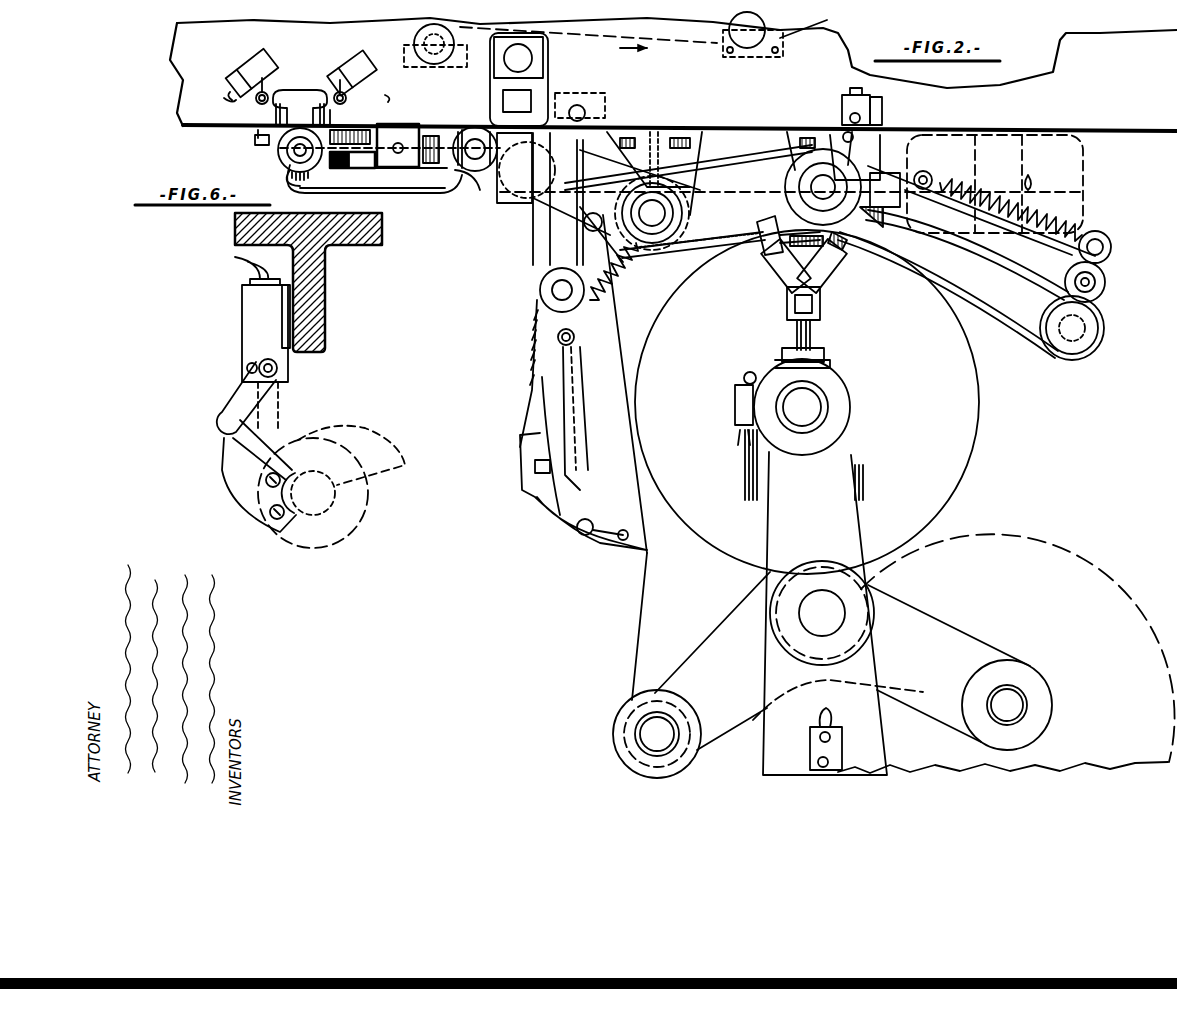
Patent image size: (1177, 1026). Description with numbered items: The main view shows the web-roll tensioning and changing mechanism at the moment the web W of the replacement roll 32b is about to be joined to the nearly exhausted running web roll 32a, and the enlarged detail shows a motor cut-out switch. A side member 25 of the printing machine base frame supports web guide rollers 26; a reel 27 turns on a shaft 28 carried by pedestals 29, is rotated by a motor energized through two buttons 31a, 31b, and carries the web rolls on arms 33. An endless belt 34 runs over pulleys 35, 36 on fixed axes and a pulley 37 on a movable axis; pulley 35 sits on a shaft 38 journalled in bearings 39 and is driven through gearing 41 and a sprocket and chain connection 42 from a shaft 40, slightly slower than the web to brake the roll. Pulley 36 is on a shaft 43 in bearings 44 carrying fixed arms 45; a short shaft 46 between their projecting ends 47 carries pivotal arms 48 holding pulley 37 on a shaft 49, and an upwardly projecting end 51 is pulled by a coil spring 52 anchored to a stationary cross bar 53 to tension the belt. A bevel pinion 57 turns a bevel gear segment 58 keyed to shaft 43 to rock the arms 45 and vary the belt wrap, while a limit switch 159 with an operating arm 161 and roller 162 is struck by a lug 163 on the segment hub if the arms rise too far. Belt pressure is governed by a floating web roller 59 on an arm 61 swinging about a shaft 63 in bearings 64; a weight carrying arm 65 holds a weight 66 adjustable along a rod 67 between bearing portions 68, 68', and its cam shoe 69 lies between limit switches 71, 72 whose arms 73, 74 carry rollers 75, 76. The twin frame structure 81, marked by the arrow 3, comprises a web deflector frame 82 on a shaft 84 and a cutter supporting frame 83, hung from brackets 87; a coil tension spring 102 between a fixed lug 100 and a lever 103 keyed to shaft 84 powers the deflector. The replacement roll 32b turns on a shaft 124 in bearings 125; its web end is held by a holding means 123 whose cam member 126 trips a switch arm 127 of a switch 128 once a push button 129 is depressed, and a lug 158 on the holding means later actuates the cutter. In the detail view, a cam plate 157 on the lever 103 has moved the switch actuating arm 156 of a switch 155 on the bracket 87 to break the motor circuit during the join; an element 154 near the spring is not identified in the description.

In FIG. 2, the lever 3 is at (520, 335).
In FIG. 2, the side member of printing machine base frame 25 is at (750, 126).
In FIG. 2, the web guide rollers 26 is at (520, 85).
In FIG. 2, the reel 27 is at (822, 602).
In FIG. 2, the shaft 28 is at (797, 600).
In FIG. 2, the pedestals 29 is at (887, 743).
In FIG. 2, the button 31a is at (830, 735).
In FIG. 2, the button 31b is at (818, 760).
In FIG. 2, the running web roll 32a is at (620, 743).
In FIG. 2, the replacement roll 32b is at (978, 445).
In FIG. 2, the arms 33 is at (705, 643).
In FIG. 2, the endless belt 34 is at (1000, 338).
In FIG. 2, the pulley 35 is at (693, 228).
In FIG. 2, the pulley 36 is at (783, 205).
In FIG. 2, the pulley 37 is at (1047, 320).
In FIG. 2, the shaft 38 is at (652, 217).
In FIG. 2, the bearings 39 is at (697, 181).
In FIG. 2, the shaft 40 is at (716, 193).
In FIG. 2, the gearing 41 is at (573, 237).
In FIG. 2, the sprocket and chain connection 42 is at (630, 160).
In FIG. 2, the shaft 43 is at (845, 262).
In FIG. 2, the bearings 44 is at (782, 145).
In FIG. 2, the arms 45 is at (960, 240).
In FIG. 2, the short shaft 46 is at (1062, 288).
In FIG. 2, the projecting ends 47 is at (1108, 285).
In FIG. 2, the pivotal arms 48 is at (1103, 307).
In FIG. 2, the shaft 49 is at (1070, 345).
In FIG. 2, the upwardly projecting end 51 is at (1078, 258).
In FIG. 2, the spring 52 is at (1035, 210).
In FIG. 2, the stationary cross bar 53 is at (933, 180).
In FIG. 2, the bevel pinion 57 is at (877, 210).
In FIG. 2, the bevel gear segment 58 is at (882, 152).
In FIG. 2, the floating web roller 59 is at (475, 172).
In FIG. 2, the arm 61 is at (365, 165).
In FIG. 2, the shaft 63 is at (292, 156).
In FIG. 2, the bearings 64 is at (253, 138).
In FIG. 2, the weight carrying arm 65 is at (306, 194).
In FIG. 2, the weight 66 is at (385, 135).
In FIG. 2, the rod 67 is at (352, 160).
In FIG. 2, the bearing portion 68 is at (284, 182).
In FIG. 2, the bearing portion 68' is at (454, 199).
In FIG. 2, the cam shoe 69 is at (302, 96).
In FIG. 2, the limit switch 71 is at (270, 70).
In FIG. 2, the limit switch 72 is at (330, 64).
In FIG. 2, the switch arm 73 is at (272, 94).
In FIG. 2, the switch arm 74 is at (352, 68).
In FIG. 2, the roller 75 is at (258, 102).
In FIG. 2, the roller 76 is at (346, 102).
In FIG. 2, the twin frame structure 81 is at (590, 393).
In FIG. 2, the web deflector frame 82 is at (553, 408).
In FIG. 2, the cutter supporting frame 83 is at (540, 430).
In FIG. 2, the shaft 84 is at (552, 292).
In FIG. 6, the shaft 84 is at (312, 513).
In FIG. 6, the bracket 87 is at (327, 310).
In FIG. 2, the fixed lug 100 is at (625, 255).
In FIG. 2, the coil tension spring 102 is at (612, 282).
In FIG. 2, the lever 103 is at (545, 335).
In FIG. 2, the web holding means 123 is at (812, 290).
In FIG. 2, the shaft 124 is at (802, 407).
In FIG. 2, the bearings 125 is at (848, 388).
In FIG. 2, the cam member 126 is at (767, 366).
In FIG. 2, the switch arm 127 is at (740, 392).
In FIG. 2, the circuit closing switch 128 is at (735, 425).
In FIG. 2, the push button 129 is at (757, 482).
In FIG. 2, the spring end 154 is at (1010, 235).
In FIG. 6, the switch 155 is at (292, 372).
In FIG. 6, the switch actuating arm 156 is at (230, 396).
In FIG. 6, the cam plate 157 is at (220, 463).
In FIG. 2, the lug 158 is at (758, 240).
In FIG. 2, the limit switch 159 is at (840, 95).
In FIG. 2, the operating arm 161 is at (845, 118).
In FIG. 2, the roller 162 is at (840, 135).
In FIG. 2, the lug 163 is at (868, 150).
In FIG. 2, the web W is at (633, 650).